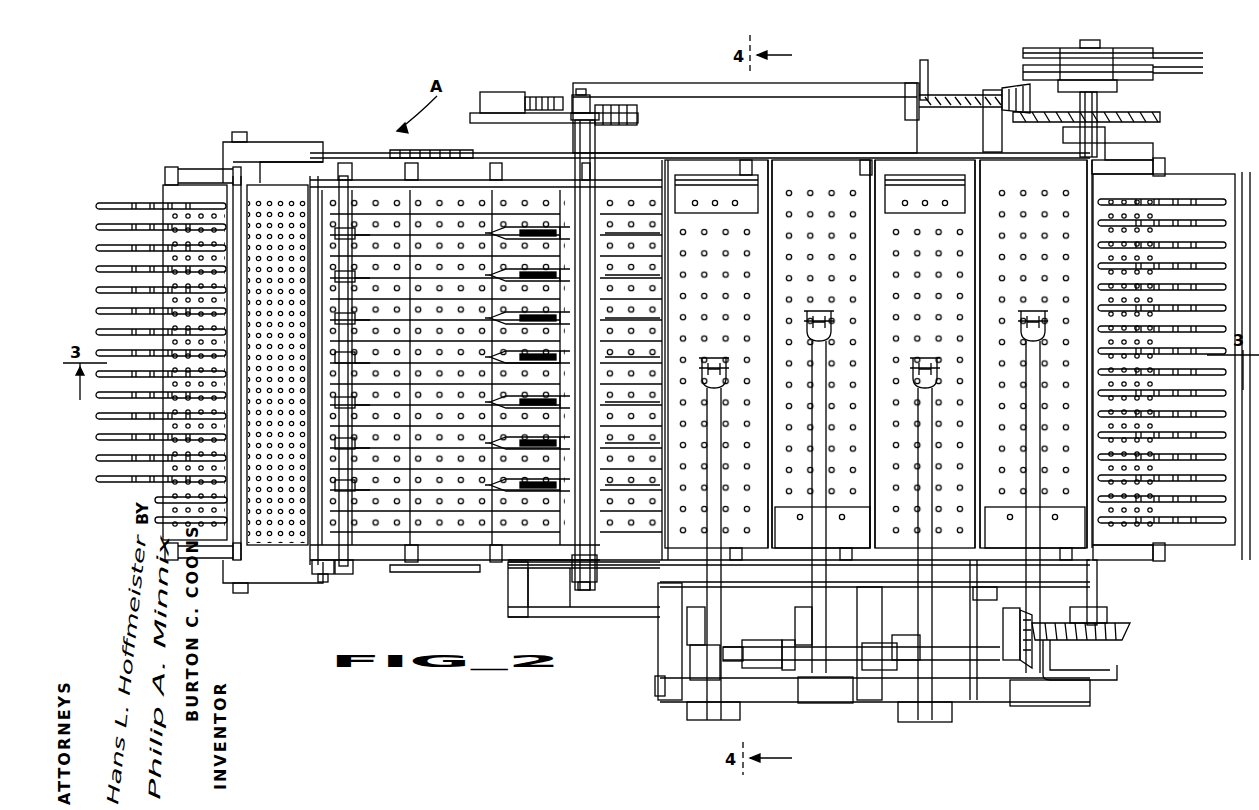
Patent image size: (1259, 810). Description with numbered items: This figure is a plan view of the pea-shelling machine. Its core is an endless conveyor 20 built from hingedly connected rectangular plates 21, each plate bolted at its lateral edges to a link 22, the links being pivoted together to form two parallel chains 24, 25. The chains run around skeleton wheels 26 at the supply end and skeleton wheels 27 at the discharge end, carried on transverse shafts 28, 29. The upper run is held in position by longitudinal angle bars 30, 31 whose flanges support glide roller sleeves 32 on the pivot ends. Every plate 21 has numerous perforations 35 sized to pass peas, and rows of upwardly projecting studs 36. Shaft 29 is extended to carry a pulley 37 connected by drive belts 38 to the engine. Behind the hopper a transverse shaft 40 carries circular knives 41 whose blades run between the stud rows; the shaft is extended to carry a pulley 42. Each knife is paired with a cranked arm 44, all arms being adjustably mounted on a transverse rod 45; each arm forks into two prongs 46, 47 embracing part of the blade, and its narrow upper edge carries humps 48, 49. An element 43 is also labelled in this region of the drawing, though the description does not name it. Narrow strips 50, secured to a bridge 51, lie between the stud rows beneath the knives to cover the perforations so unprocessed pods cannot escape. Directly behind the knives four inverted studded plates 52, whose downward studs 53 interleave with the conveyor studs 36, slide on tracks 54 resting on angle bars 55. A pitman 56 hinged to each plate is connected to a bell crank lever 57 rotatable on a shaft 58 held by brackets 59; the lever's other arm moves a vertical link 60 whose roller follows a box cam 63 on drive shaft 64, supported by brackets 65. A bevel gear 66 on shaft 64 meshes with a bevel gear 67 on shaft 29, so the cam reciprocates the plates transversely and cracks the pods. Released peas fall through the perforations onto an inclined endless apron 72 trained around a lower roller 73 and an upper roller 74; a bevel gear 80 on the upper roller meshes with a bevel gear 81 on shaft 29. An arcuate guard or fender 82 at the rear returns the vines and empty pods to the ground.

The endless conveyor 20 is at (275, 190).
The plates 21 is at (162, 185).
The link 22 is at (227, 191).
The chain 24 is at (171, 164).
The chain 25 is at (405, 560).
The skeleton wheels 26 is at (168, 170).
The skeleton wheels 27 is at (1128, 152).
The transverse shaft 28 is at (240, 132).
The transverse shaft 29 is at (1100, 104).
The angle bar 30 is at (373, 155).
The angle bar 31 is at (370, 570).
The glide roller sleeves 32 is at (233, 167).
The perforations 35 is at (175, 255).
The pins or studs 36 is at (115, 270).
The pulley 37 is at (1060, 42).
The drive belts 38 is at (1185, 47).
The transverse shaft 40 is at (585, 97).
The circular knives 41 is at (550, 276).
The pulley 42 is at (620, 113).
The pivot pin 43 is at (492, 231).
The cranked arm 44 is at (365, 278).
The transverse rod 45 is at (345, 573).
The prong 46 is at (540, 231).
The prong 47 is at (515, 282).
The humps 48 is at (485, 313).
The humps 49 is at (570, 188).
The strips 50 is at (363, 208).
The bridge 51 is at (320, 580).
The rectangular plates 52 is at (820, 187).
The studs 53 is at (763, 246).
The tracks 54 is at (868, 155).
The angle bars 55 is at (727, 155).
The pitman 56 is at (795, 628).
The bell crank lever 57 is at (778, 702).
The shaft 58 is at (660, 692).
The brackets 59 is at (665, 652).
The vertical link 60 is at (695, 703).
The box cam 63 is at (687, 632).
The drive shaft 64 is at (778, 670).
The brackets 65 is at (983, 630).
The bevel gear 66 is at (1115, 675).
The bevel gear 67 is at (1120, 652).
The endless apron 72 is at (555, 622).
The lower roller 73 is at (525, 613).
The upper roller 74 is at (940, 96).
The bevel gear 80 is at (1017, 88).
The bevel gear 81 is at (1152, 118).
The guard or fender 82 is at (1235, 558).